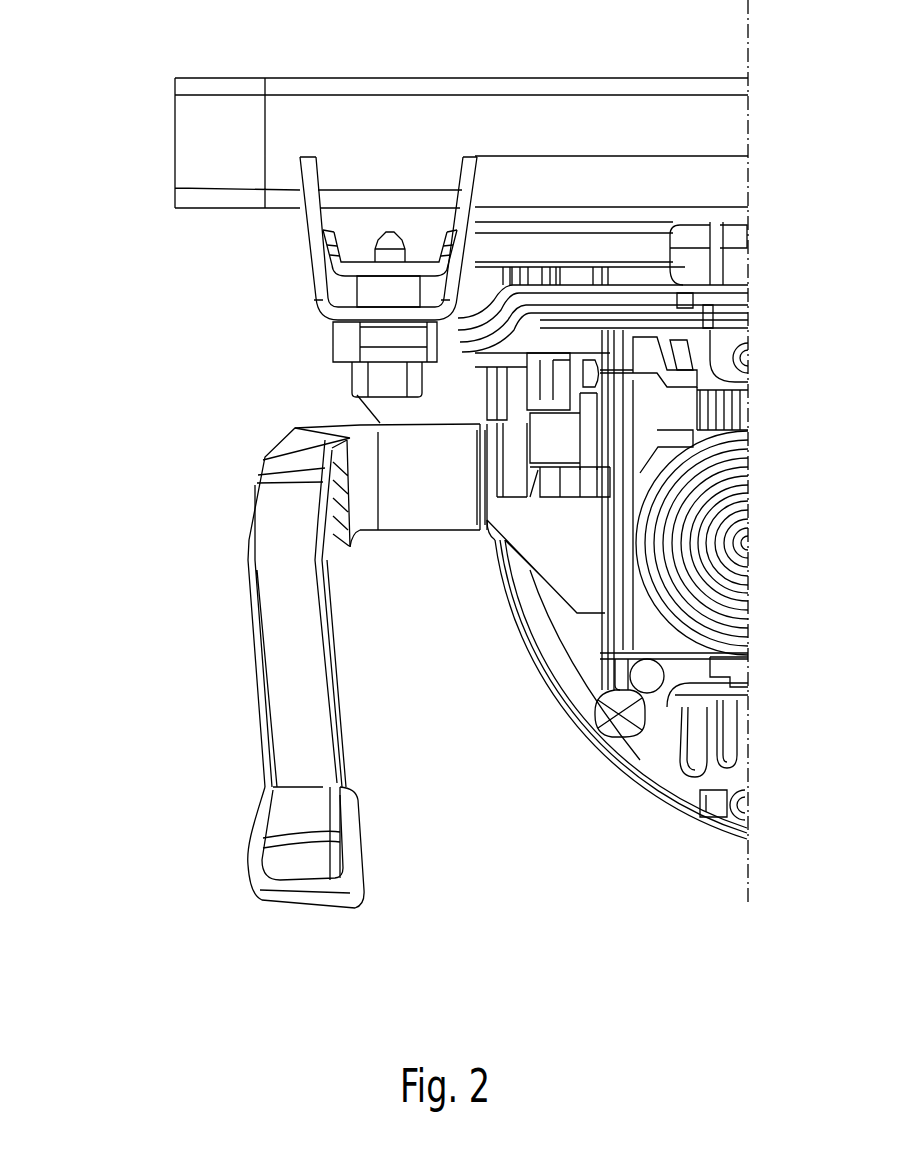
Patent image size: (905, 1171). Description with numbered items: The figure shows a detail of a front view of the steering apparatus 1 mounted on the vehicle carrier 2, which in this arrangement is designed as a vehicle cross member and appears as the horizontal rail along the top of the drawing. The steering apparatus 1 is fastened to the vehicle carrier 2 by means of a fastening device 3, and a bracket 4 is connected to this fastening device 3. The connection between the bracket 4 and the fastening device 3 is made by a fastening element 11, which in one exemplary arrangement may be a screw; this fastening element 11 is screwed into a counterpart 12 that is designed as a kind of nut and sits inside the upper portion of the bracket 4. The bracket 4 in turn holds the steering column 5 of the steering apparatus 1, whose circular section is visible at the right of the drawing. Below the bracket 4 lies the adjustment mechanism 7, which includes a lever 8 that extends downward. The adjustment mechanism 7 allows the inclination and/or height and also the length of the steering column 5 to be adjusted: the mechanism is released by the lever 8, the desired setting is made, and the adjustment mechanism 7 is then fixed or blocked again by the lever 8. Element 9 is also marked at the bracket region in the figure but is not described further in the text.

The steering apparatus 1 is at (170, 341).
The vehicle carrier 2 is at (688, 88).
The fastening device 3 is at (288, 360).
The bracket 4 is at (288, 326).
The steering column 5 is at (758, 444).
The adjustment mechanism 7 is at (470, 596).
The lever 8 is at (320, 897).
The bracket 9 is at (283, 297).
The fastening element 11 is at (360, 378).
The counterpart 12 is at (357, 263).